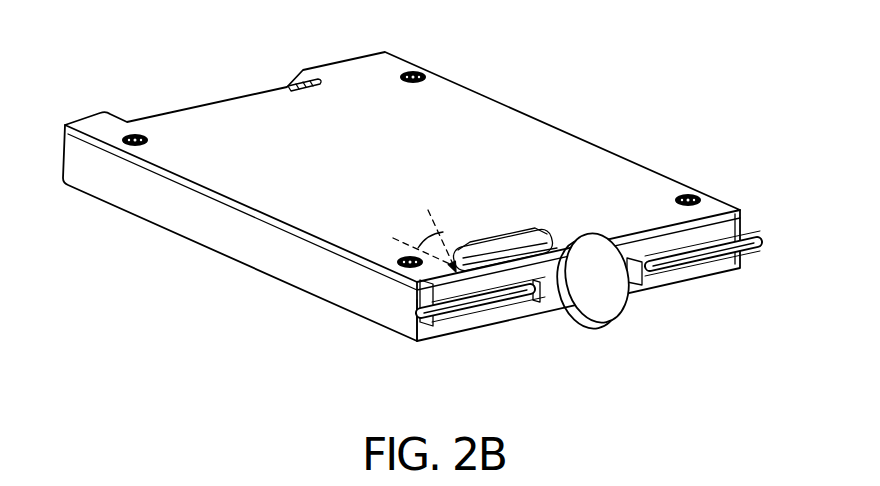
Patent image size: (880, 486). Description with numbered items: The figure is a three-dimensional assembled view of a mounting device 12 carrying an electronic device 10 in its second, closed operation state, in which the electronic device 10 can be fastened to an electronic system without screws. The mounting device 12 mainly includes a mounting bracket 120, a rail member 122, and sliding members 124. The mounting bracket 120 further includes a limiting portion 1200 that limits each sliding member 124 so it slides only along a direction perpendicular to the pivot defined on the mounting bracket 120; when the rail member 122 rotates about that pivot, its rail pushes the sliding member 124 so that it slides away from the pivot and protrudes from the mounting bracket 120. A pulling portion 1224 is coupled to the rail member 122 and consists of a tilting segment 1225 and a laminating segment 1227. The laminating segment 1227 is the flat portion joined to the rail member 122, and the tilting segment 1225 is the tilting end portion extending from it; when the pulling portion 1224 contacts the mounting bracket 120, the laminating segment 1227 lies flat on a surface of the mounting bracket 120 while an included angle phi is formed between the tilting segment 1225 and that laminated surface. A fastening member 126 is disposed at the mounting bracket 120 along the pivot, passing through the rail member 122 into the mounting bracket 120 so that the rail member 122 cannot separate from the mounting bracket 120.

The mounting device 12 is at (401, 184).
The electronic device 10 is at (405, 350).
The mounting bracket 120 is at (487, 110).
The rail member 122 is at (433, 231).
The pulling portion 1224 is at (455, 268).
The tilting segment 1225 is at (482, 235).
The laminating segment 1227 is at (565, 235).
The limiting portion 1200 is at (716, 225).
The sliding member 124 is at (512, 310).
The fastening member 126 is at (598, 310).